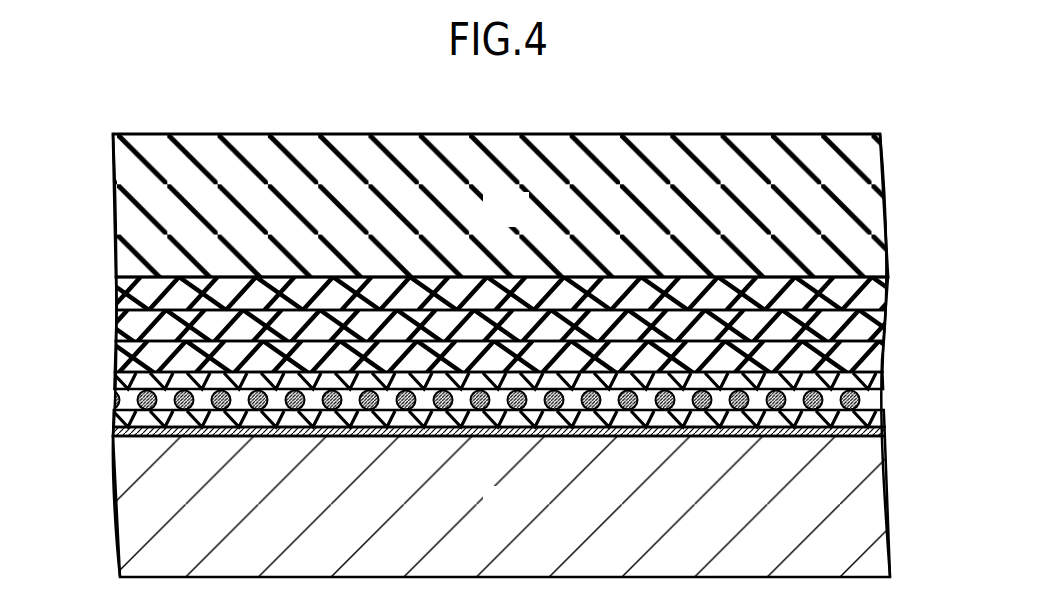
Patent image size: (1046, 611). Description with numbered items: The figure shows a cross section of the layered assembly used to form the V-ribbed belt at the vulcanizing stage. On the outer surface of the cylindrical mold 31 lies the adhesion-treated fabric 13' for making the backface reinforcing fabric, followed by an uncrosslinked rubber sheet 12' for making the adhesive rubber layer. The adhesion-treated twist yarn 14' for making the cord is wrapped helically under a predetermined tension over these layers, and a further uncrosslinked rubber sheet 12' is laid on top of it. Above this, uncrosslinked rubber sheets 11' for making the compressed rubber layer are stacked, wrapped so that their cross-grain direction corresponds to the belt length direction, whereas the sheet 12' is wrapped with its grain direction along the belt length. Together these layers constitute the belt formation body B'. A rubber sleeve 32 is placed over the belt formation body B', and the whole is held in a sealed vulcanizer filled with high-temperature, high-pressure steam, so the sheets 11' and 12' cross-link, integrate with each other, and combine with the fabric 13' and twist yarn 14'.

The rubber sleeve 32 is at (488, 222).
The cylindrical mold 31 is at (488, 517).
The uncrosslinked rubber sheet 11' is at (465, 324).
The uncrosslinked rubber sheet 12' is at (464, 398).
The fabric 13' is at (526, 453).
The twist yarn 14' is at (521, 399).
The belt formation body B' is at (902, 246).